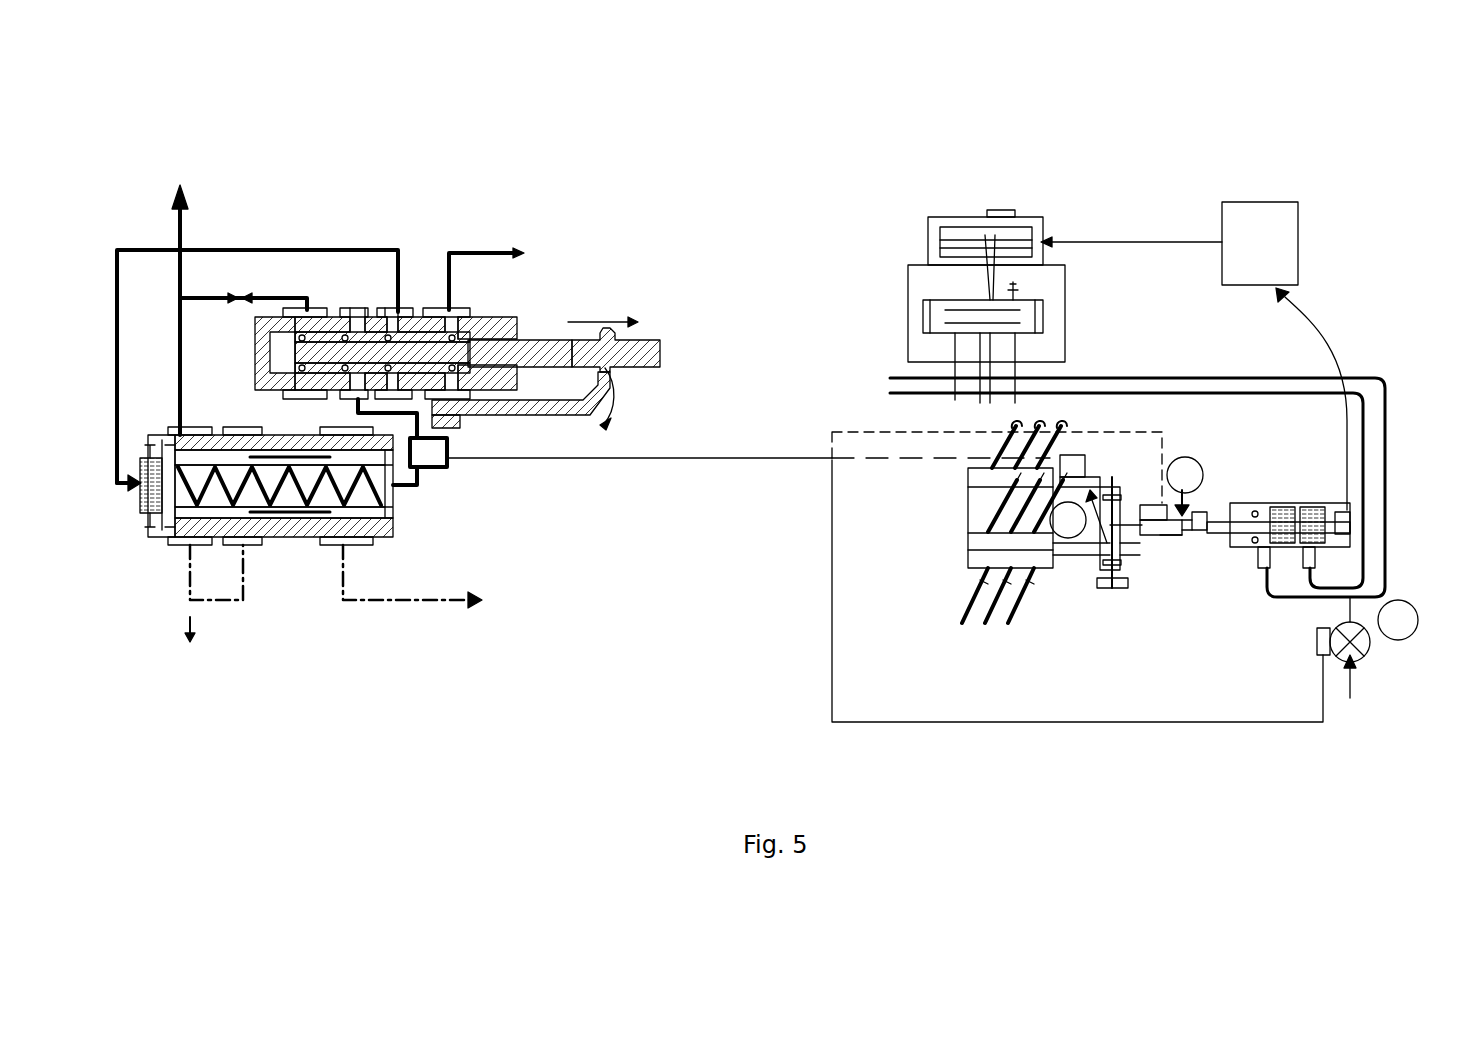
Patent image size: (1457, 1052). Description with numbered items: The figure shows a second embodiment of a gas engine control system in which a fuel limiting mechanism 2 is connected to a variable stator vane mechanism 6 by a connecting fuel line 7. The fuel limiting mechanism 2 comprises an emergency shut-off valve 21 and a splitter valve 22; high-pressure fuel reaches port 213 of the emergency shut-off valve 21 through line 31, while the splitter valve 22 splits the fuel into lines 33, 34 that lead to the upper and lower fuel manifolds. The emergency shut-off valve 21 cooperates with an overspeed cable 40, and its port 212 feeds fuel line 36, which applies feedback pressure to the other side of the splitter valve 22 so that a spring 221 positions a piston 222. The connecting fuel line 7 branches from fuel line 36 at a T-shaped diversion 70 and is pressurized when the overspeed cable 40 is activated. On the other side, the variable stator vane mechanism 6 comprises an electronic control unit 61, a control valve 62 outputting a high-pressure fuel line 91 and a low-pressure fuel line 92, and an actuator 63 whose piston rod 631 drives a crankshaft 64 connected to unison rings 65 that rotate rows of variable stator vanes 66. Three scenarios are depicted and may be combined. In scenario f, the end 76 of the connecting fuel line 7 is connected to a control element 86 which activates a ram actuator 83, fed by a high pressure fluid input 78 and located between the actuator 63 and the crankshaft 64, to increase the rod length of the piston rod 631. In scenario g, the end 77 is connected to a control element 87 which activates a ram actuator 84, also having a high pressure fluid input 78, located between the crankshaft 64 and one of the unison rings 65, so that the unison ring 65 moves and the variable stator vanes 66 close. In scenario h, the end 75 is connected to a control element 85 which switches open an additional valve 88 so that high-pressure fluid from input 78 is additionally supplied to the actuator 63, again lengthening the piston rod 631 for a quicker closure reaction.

The fuel limiting mechanism 2 is at (333, 182).
The variable stator vane mechanism 6 is at (965, 157).
The connecting fuel line 7 is at (710, 459).
The emergency shut-off valve 21 is at (418, 312).
The splitter valve 22 is at (296, 537).
The line 31 is at (241, 250).
The line 33 is at (178, 358).
The line 34 is at (190, 622).
The fuel line 36 is at (396, 486).
The overspeed cable 40 is at (538, 340).
The electronic control unit 61 is at (1262, 200).
The control valve 62 is at (1025, 215).
The actuator 63 is at (1280, 505).
The crankshaft 64 is at (1102, 572).
The unison rings 65 is at (1065, 565).
The variable stator vanes 66 is at (968, 592).
The T-shaped diversion 70 is at (448, 466).
The end of connecting fuel line 75 is at (1063, 722).
The end of connecting fuel line 76 is at (870, 432).
The end of connecting fuel line 77 is at (880, 459).
The high pressure fluid input 78 is at (1352, 688).
The ram actuator 83 is at (1176, 537).
The ram actuator 84 is at (1125, 550).
The control element 85 is at (1317, 645).
The control element 86 is at (1152, 505).
The control element 87 is at (1078, 455).
The additional valve 88 is at (1370, 650).
The high-pressure fuel line 91 is at (1366, 420).
The low-pressure fuel line 92 is at (1388, 390).
The port 212 is at (353, 312).
The port 213 is at (388, 312).
The spring 221 is at (380, 503).
The piston 222 is at (172, 522).
The piston rod 631 is at (1195, 518).